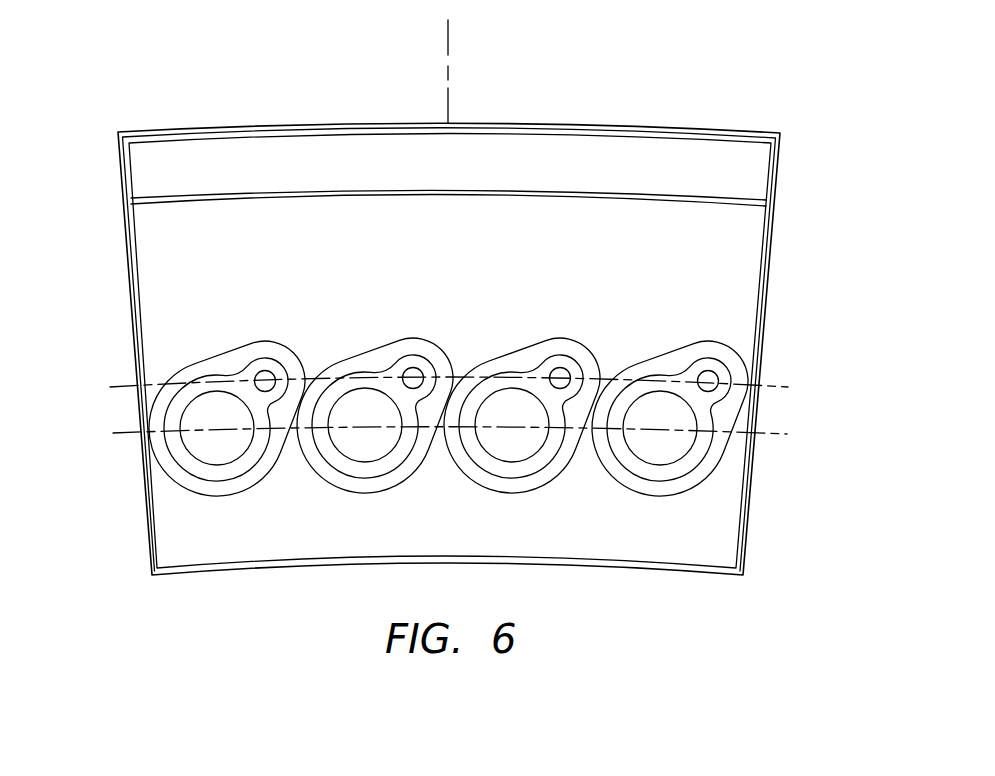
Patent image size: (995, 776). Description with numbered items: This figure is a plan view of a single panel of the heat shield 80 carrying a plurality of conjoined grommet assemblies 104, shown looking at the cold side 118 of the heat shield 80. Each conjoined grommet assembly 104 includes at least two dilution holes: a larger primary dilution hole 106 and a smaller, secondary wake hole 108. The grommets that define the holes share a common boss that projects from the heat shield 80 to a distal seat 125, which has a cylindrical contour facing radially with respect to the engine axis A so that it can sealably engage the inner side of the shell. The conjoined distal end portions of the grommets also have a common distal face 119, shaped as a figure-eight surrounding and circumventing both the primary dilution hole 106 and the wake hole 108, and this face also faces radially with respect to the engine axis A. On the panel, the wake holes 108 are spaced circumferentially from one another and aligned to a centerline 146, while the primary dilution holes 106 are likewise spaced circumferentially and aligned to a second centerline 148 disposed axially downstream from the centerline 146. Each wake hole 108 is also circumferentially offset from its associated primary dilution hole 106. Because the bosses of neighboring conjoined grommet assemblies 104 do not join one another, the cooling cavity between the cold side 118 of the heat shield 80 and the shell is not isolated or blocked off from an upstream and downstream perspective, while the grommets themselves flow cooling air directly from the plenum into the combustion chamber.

The heat shield 80 is at (740, 236).
The conjoined grommet assembly 104 is at (94, 321).
The primary dilution hole 106 is at (513, 398).
The wake hole 108 is at (567, 363).
The cold side 118 is at (730, 281).
The common distal face 119 is at (267, 363).
The distal seat 125 is at (225, 362).
The centerline 146 is at (779, 386).
The centerline 148 is at (773, 436).
The engine axis A is at (448, 43).